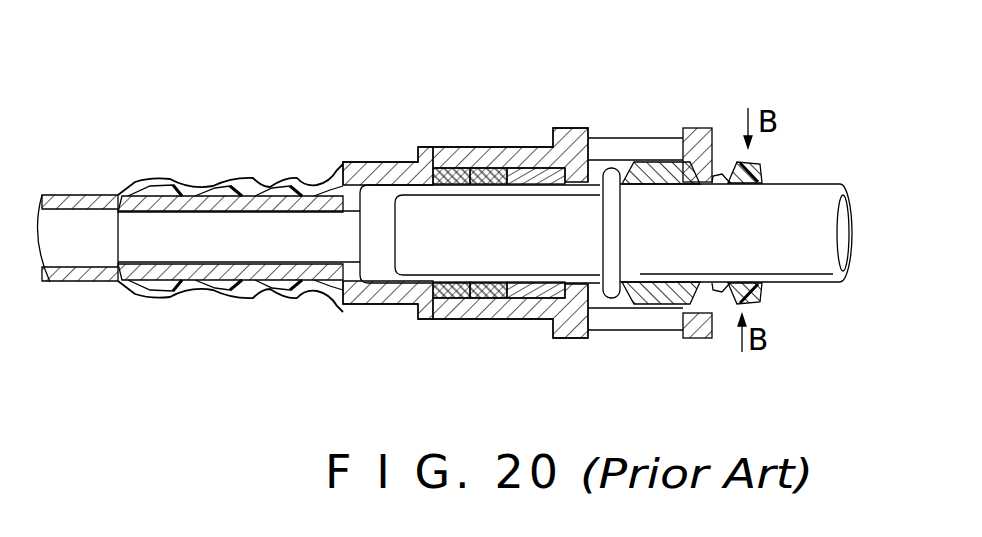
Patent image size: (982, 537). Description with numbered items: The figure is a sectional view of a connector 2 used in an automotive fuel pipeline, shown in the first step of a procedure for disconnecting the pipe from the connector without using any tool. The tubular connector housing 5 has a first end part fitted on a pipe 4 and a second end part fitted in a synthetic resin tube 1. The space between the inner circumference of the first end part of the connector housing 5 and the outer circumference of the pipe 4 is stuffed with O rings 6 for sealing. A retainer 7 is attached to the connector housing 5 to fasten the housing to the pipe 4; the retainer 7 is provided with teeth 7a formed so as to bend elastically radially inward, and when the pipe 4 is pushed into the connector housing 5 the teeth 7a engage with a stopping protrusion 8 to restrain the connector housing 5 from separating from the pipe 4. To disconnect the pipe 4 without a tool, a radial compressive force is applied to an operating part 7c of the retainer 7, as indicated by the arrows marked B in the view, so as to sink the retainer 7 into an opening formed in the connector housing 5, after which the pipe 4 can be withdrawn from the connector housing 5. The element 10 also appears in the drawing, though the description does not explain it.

The synthetic resin tube 1 is at (150, 190).
The connector 2 is at (436, 215).
The pipe 4 is at (440, 258).
The connector housing 5 is at (380, 170).
The O rings 6 is at (455, 168).
The retainer 7 is at (707, 248).
The teeth 7a is at (624, 296).
The operating part 7c is at (760, 170).
The stopping protrusion 8 is at (615, 165).
The nut 10 is at (672, 135).